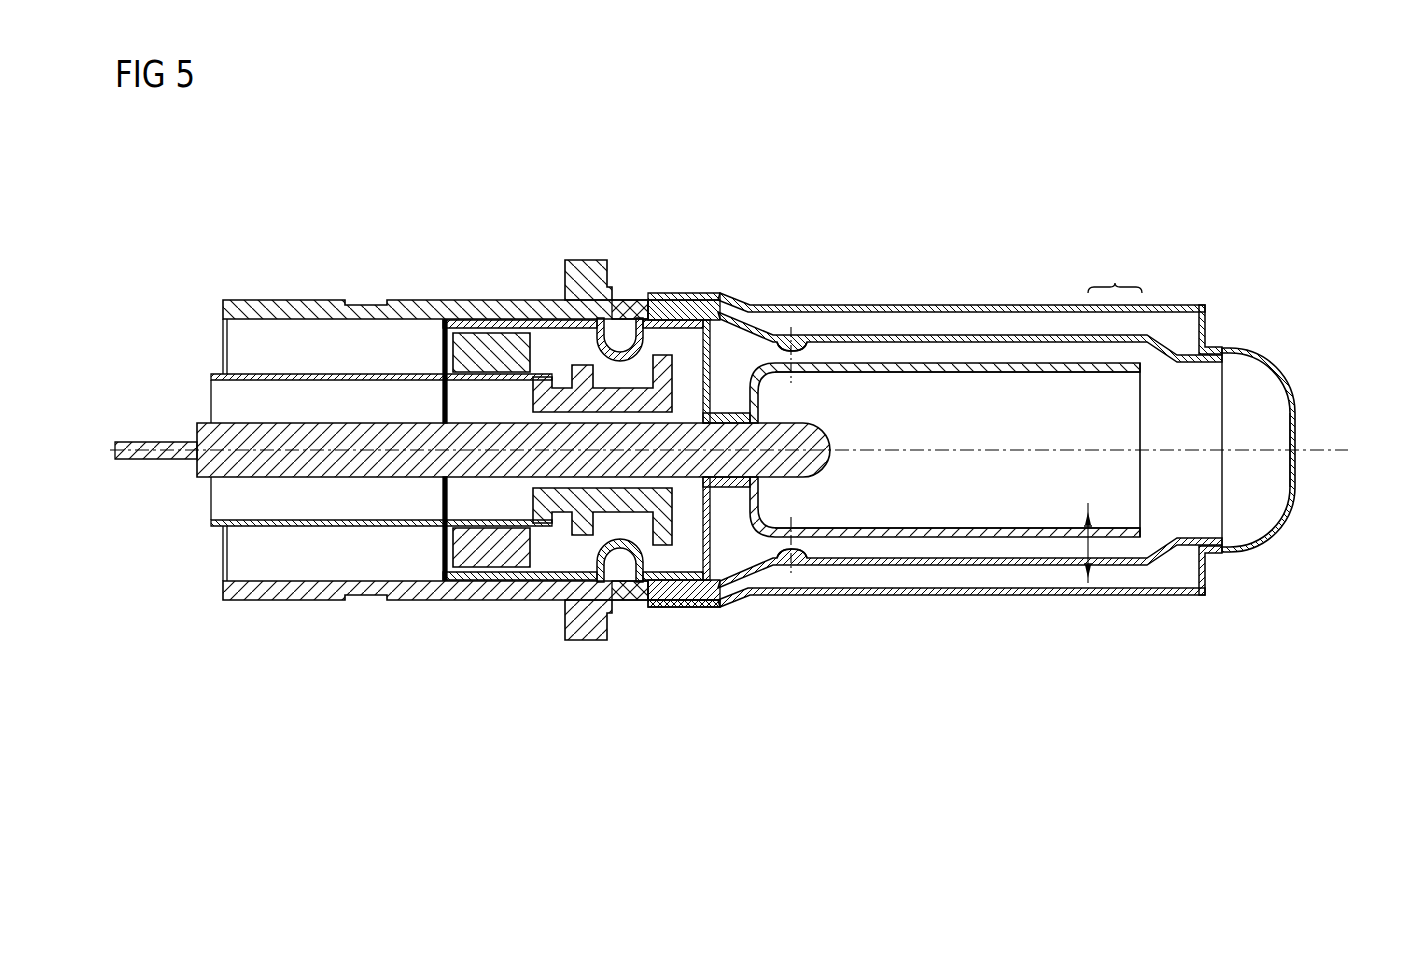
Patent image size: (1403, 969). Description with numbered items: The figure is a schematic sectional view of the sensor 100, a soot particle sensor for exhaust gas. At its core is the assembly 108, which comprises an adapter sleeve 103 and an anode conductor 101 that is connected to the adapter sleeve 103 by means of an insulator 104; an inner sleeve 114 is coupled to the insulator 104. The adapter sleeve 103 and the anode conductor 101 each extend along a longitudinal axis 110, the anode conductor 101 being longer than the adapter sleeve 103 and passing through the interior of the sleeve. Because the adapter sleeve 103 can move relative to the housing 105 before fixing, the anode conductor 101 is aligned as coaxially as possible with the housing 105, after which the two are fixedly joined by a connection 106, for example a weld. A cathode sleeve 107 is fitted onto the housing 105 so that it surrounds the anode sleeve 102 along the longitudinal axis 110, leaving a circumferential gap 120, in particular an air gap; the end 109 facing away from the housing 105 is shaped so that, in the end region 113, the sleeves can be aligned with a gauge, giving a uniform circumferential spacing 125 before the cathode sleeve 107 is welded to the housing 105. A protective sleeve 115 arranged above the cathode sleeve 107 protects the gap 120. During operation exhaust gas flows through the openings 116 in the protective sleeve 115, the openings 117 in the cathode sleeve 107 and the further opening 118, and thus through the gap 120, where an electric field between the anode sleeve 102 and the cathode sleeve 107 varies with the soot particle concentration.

The sensor 100 is at (1001, 186).
The anode conductor 101 is at (400, 440).
The anode sleeve 102 is at (945, 537).
The adapter sleeve 103 is at (618, 322).
The insulator 104 is at (467, 350).
The housing 105 is at (235, 300).
The connection 106 is at (675, 315).
The cathode sleeve 107 is at (945, 337).
The assembly 108 is at (672, 622).
The end 109 is at (1267, 328).
The longitudinal axis 110 is at (1336, 447).
The end region 113 is at (1117, 284).
The inner sleeve 114 is at (290, 374).
The protective sleeve 115 is at (1018, 305).
The openings 116 is at (1207, 570).
The openings 117 is at (792, 568).
The further opening 118 is at (1292, 466).
The gap 120 is at (868, 355).
The spacing 125 is at (1078, 556).